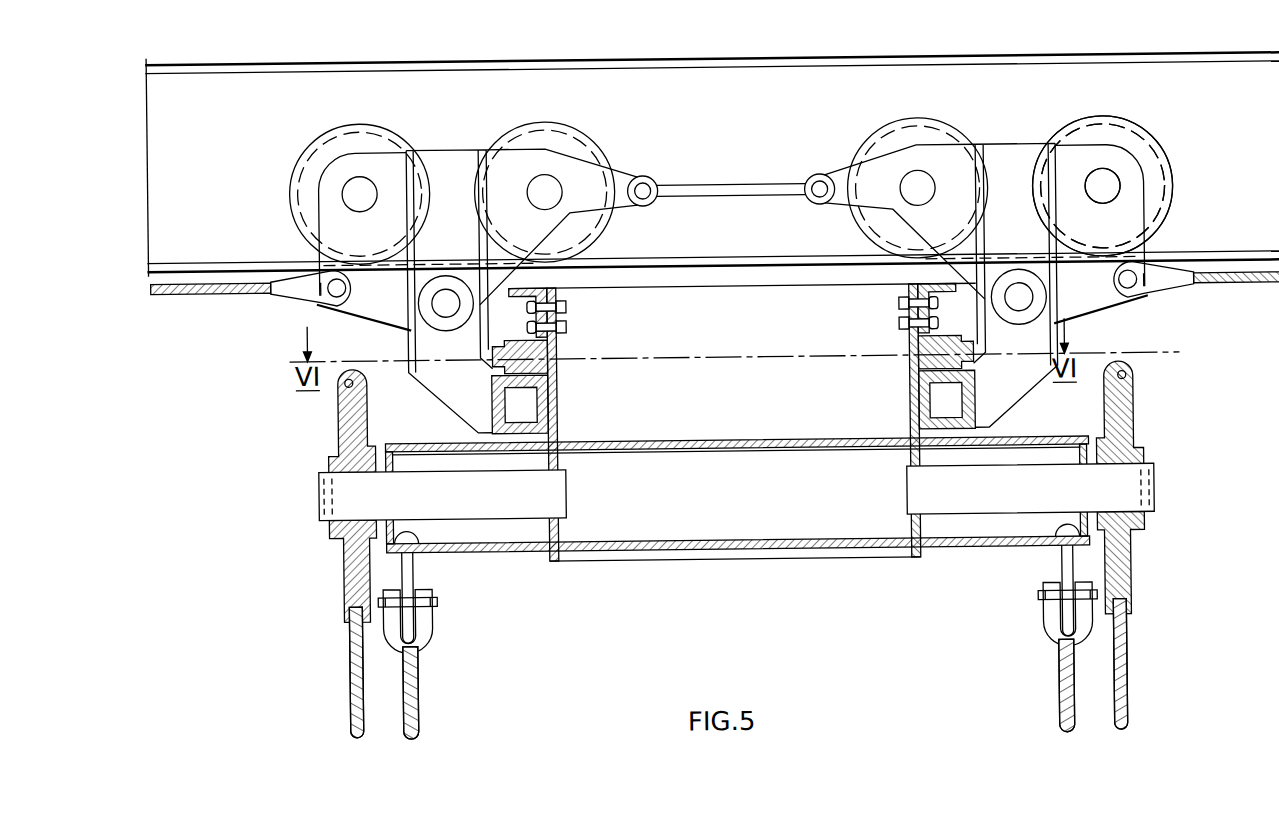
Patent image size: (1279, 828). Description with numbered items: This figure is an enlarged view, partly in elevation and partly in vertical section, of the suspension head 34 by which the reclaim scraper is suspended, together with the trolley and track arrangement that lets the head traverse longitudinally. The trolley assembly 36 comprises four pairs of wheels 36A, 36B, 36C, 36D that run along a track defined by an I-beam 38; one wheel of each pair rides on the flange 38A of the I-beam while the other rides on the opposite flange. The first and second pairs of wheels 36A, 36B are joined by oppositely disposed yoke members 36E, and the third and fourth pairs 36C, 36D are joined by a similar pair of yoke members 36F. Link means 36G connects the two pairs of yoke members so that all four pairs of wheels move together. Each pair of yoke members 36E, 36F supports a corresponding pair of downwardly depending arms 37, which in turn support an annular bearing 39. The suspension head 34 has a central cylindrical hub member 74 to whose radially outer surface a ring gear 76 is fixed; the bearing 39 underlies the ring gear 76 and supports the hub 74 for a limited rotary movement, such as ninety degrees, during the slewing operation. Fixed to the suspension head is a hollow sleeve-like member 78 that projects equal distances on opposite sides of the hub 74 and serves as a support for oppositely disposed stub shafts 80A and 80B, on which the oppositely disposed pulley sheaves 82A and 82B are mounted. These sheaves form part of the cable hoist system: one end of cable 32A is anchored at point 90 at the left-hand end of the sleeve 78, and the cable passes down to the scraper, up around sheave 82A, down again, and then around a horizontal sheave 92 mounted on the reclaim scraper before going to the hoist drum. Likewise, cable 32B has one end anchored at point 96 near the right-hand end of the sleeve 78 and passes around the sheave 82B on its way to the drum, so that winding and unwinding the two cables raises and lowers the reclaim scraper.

The cable 32A is at (412, 686).
The cable 32B is at (1066, 692).
The suspension head 34 is at (648, 290).
The trolley assembly 36 is at (1208, 144).
The pair of wheels 36A is at (307, 138).
The pair of wheels 36B is at (588, 128).
The pair of wheels 36C is at (866, 133).
The pair of wheels 36D is at (1136, 113).
The yoke members 36E is at (448, 155).
The yoke members 36F is at (1003, 147).
The link means 36G is at (760, 183).
The downwardly depending arms 37 is at (416, 341).
The I-beam 38 is at (505, 58).
The flange 38A is at (278, 258).
The annular bearing 39 is at (486, 408).
The cylindrical hub member 74 is at (920, 398).
The ring gear 76 is at (957, 342).
The hollow sleeve-like member 78 is at (488, 551).
The stub shaft 80A is at (565, 480).
The stub shaft 80B is at (905, 478).
The pulley sheave 82A is at (343, 566).
The pulley sheave 82B is at (1132, 573).
The anchor point 90 is at (410, 533).
The horizontal sheave 92 is at (212, 292).
The anchor point 96 is at (1072, 530).